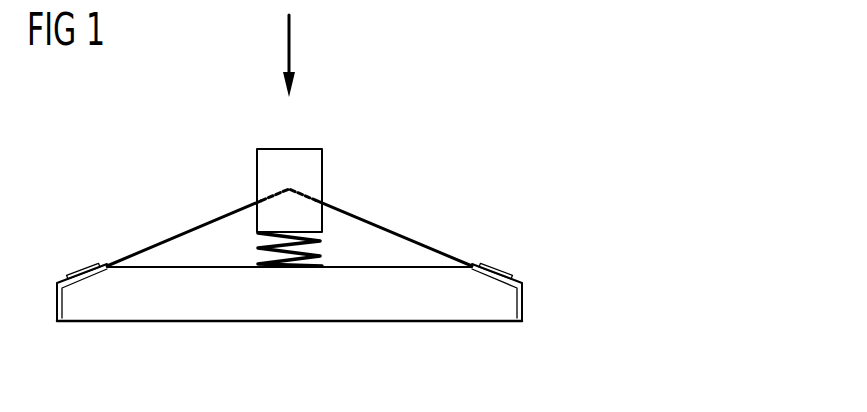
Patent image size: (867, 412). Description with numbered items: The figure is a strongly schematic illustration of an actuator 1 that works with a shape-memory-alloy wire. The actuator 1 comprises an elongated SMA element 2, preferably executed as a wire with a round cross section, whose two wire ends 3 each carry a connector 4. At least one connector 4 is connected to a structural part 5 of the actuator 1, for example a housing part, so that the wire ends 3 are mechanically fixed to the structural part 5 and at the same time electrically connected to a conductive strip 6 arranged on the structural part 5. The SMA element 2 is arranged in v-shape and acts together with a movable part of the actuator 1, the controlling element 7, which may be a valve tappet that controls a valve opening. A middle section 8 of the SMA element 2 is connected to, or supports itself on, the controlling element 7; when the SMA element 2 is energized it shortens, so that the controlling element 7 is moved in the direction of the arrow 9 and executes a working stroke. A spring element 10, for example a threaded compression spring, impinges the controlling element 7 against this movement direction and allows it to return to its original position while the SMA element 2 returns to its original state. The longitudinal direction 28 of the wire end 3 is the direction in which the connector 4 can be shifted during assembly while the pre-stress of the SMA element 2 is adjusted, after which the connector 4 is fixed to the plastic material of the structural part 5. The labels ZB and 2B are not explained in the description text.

The actuator 1 is at (465, 133).
The SMA element 2 is at (354, 205).
The wire ends 3 is at (146, 254).
The connector 4 is at (82, 270).
The structural part 5 is at (357, 297).
The conductive strip 6 is at (57, 306).
The controlling element 7 is at (305, 171).
The middle section 8 is at (272, 196).
The arrow 9 is at (291, 35).
The spring element 10 is at (272, 258).
The longitudinal direction 28 is at (132, 239).
The tensile region ZB is at (184, 216).
The bending region 2B is at (463, 244).